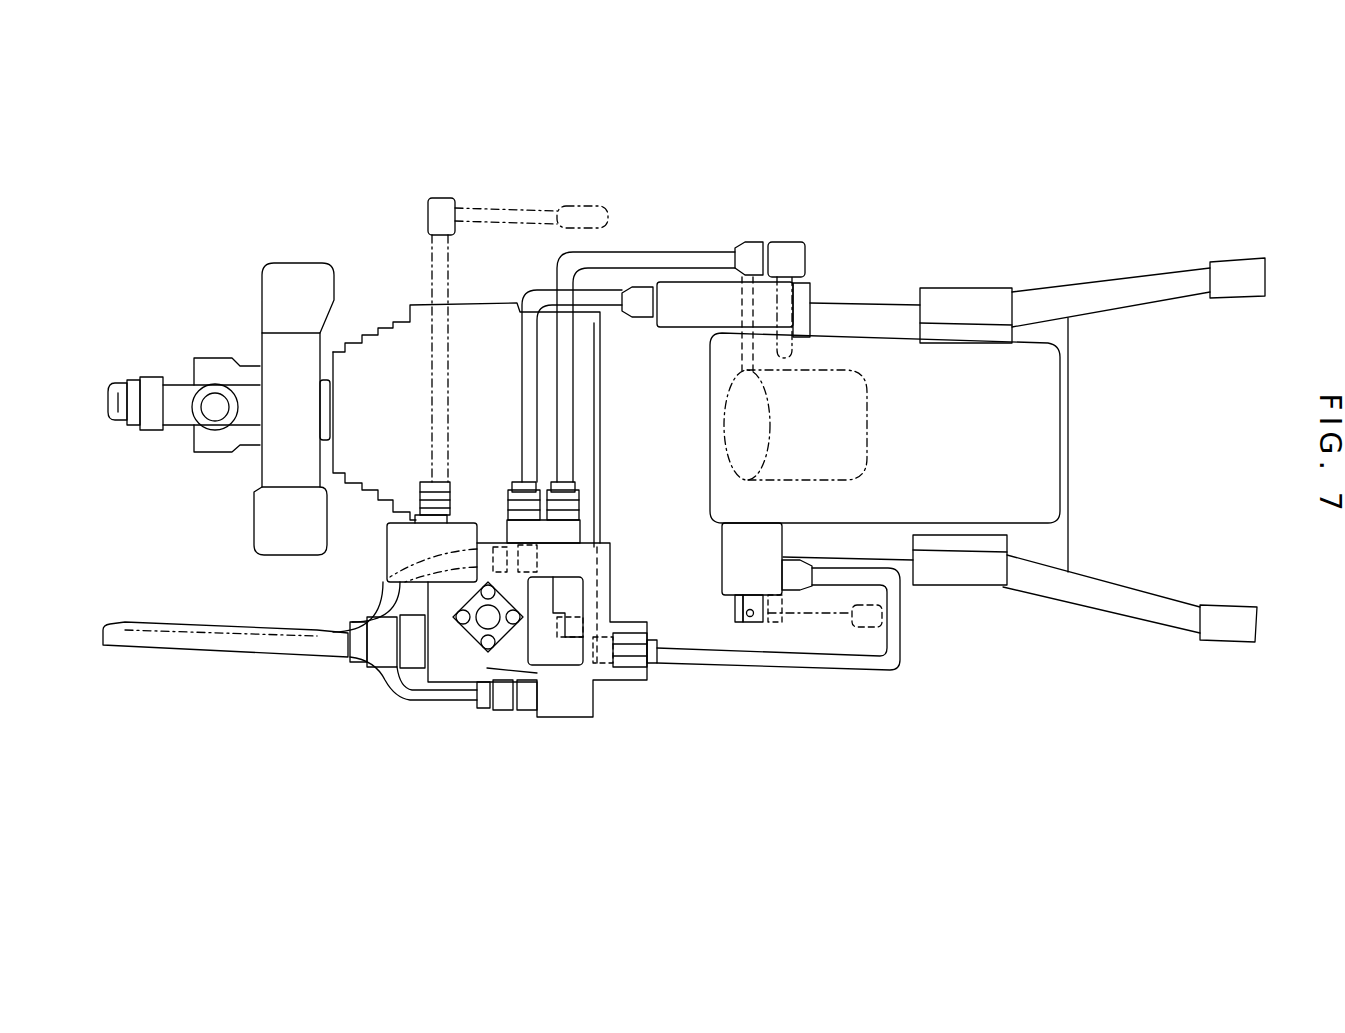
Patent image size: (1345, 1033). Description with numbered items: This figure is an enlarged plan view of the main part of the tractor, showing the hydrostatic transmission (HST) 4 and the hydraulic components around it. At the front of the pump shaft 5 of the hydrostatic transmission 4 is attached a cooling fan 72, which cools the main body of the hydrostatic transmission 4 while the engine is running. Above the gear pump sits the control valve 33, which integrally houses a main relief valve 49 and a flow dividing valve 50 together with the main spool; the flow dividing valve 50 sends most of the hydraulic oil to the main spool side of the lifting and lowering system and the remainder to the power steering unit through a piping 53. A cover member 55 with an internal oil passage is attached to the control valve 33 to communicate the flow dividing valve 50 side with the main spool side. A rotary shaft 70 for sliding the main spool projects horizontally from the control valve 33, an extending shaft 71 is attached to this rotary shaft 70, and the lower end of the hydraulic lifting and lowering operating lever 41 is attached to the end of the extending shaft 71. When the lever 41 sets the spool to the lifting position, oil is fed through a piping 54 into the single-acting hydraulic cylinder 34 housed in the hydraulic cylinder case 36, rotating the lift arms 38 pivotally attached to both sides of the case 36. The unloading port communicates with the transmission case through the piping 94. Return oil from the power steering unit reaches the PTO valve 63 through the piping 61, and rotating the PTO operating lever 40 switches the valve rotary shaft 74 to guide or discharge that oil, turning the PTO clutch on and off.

The hydrostatic transmission (HST) 4 is at (393, 323).
The pump shaft 5 is at (320, 393).
The control valve 33 is at (593, 547).
The hydraulic cylinder 34 is at (867, 447).
The hydraulic cylinder case 36 is at (1043, 410).
The lift arms 38 is at (1088, 280).
The PTO operating lever 40 is at (900, 658).
The hydraulic lifting and lowering operating lever 41 is at (555, 205).
The main relief valve 49 is at (382, 657).
The flow dividing valve 50 is at (643, 680).
The piping 53 is at (460, 702).
The piping 54 is at (535, 297).
The cover member 55 is at (578, 592).
The piping 61 is at (333, 632).
The PTO valve 63 is at (783, 592).
The rotary shaft 70 is at (420, 512).
The extending shaft 71 is at (413, 387).
The cooling fan 72 is at (292, 272).
The valve rotary shaft 74 is at (755, 623).
The piping 94 is at (683, 253).